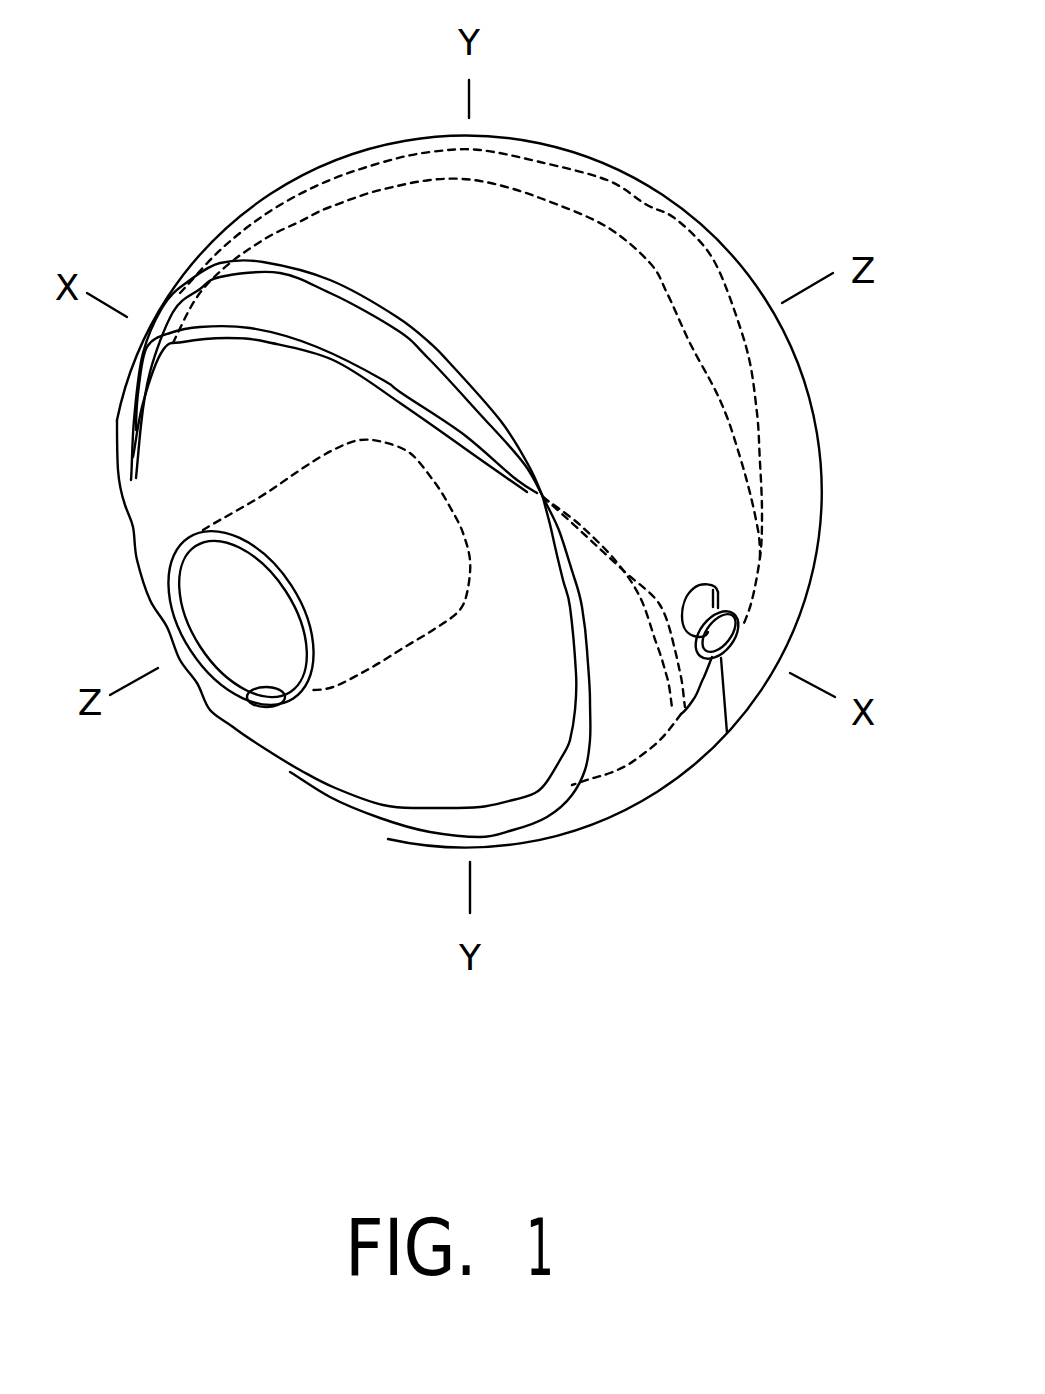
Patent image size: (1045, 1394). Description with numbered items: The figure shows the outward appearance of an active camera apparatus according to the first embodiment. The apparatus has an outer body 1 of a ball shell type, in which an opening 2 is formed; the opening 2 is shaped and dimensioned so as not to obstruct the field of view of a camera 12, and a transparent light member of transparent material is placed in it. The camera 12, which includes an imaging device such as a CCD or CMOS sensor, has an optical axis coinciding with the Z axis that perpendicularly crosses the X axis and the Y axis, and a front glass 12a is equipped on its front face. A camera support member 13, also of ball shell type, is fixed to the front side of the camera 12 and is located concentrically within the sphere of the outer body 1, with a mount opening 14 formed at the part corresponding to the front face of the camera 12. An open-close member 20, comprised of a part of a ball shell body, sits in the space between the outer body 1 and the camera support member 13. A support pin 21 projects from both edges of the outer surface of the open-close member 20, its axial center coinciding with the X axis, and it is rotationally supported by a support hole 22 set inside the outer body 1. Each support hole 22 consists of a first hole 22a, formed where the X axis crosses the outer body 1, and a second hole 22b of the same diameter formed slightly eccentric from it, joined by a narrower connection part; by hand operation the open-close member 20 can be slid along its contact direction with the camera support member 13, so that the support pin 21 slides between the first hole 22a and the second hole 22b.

The outer body 1 is at (795, 583).
The opening 2 is at (447, 827).
The camera 12 is at (257, 507).
The front glass 12a is at (236, 650).
The camera support member 13 is at (305, 742).
The mount opening 14 is at (257, 693).
The open-close member 20 is at (253, 293).
The support pin 21 is at (727, 733).
The support hole 22 is at (774, 586).
The first hole 22a is at (738, 638).
The second hole 22b is at (690, 604).